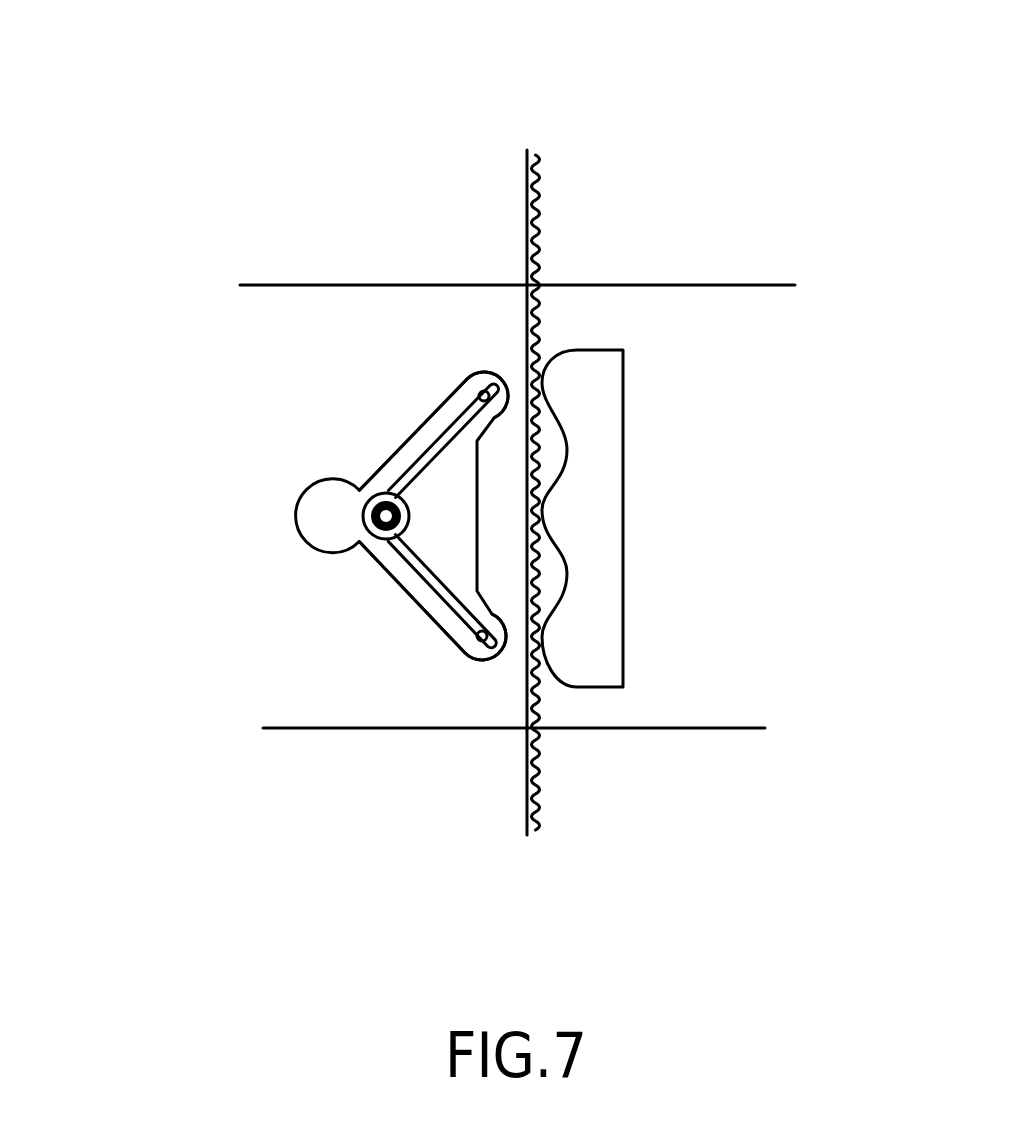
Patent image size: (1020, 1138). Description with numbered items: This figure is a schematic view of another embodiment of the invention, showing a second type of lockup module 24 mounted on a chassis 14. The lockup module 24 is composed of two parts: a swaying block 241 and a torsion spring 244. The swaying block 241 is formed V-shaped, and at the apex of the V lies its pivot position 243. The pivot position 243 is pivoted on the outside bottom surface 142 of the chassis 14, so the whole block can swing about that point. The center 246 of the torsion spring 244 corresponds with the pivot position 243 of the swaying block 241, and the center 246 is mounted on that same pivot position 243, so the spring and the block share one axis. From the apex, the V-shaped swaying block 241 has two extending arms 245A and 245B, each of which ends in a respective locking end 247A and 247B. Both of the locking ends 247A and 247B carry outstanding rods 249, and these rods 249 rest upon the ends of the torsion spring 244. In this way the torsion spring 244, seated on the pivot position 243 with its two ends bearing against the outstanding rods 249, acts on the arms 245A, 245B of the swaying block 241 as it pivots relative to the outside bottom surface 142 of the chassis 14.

The chassis 14 is at (678, 732).
The outside bottom surface 142 is at (718, 333).
The lockup module 24 is at (279, 489).
The swaying block 241 is at (427, 503).
The pivot position 243 is at (385, 515).
The torsion spring 244 is at (408, 563).
The extending arm 245A is at (438, 413).
The extending arm 245B is at (450, 627).
The center of the torsion spring 246 is at (368, 525).
The locking end 247A is at (498, 374).
The locking end 247B is at (497, 660).
The outstanding rods 249 is at (478, 378).